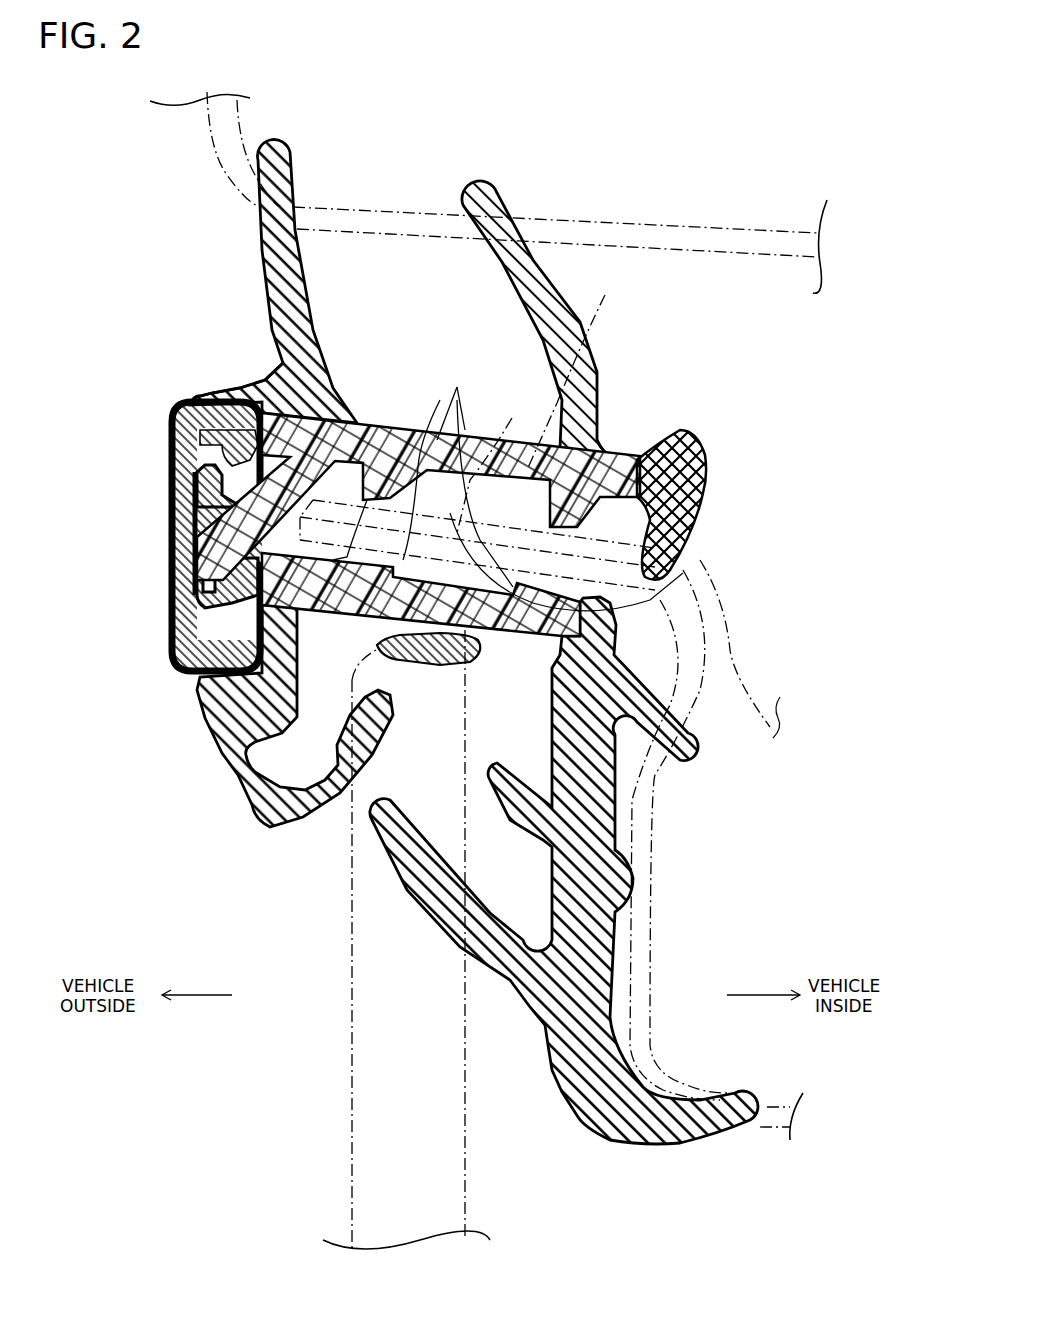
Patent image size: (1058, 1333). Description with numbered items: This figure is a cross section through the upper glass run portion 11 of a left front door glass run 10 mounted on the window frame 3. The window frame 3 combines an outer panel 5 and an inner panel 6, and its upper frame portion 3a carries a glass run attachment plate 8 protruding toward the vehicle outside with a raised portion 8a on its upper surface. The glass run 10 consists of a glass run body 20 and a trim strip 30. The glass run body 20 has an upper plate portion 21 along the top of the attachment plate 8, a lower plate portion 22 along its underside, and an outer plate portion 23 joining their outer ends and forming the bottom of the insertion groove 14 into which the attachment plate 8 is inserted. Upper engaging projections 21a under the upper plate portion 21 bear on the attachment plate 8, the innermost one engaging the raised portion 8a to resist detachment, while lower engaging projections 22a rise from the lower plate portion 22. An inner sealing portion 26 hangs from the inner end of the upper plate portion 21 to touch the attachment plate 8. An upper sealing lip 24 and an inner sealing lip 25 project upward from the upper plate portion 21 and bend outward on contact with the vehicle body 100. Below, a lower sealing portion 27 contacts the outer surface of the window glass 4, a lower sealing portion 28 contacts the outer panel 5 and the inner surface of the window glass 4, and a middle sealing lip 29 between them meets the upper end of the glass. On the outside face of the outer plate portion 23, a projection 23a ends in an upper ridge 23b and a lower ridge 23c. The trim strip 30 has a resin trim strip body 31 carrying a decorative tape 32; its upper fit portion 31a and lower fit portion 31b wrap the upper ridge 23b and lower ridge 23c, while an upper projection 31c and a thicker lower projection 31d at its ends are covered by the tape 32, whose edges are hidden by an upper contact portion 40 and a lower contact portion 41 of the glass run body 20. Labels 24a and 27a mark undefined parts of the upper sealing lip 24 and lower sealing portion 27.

The vehicle body 100 is at (197, 157).
The upper sealing lip 24 is at (263, 240).
The outer lip base 24a is at (310, 383).
The upper contact portion 40 is at (240, 373).
The upper glass run portion 11 is at (260, 360).
The upper projection 31c is at (293, 403).
The upper plate portion 21 is at (410, 423).
The upper engaging projections 21a is at (352, 458).
The lower engaging projections 22a is at (423, 470).
The glass run attachment plate 8 is at (491, 462).
The raised portion 8a is at (577, 365).
The inner sealing lip 25 is at (593, 410).
The left front door glass run 10 is at (633, 433).
The outer plate portion 23 is at (163, 517).
The upper fit portion 31a is at (165, 425).
The upper ridge 23b is at (170, 463).
The projection 23a is at (167, 487).
The decorative tape 32 is at (163, 530).
The trim strip 30 is at (189, 468).
The trim strip body 31 is at (163, 567).
The lower ridge 23c is at (167, 587).
The lower fit portion 31b is at (167, 627).
The lower projection 31d is at (170, 657).
The lower contact portion 41 is at (187, 680).
The glass run body 20 is at (417, 642).
The lower sealing portion 27 is at (193, 767).
The hook stem 27a is at (310, 605).
The middle sealing lip 29 is at (437, 665).
The lower plate portion 22 is at (543, 630).
The inner sealing portion 26 is at (707, 490).
The insertion groove 14 is at (620, 610).
The window frame 3 is at (736, 850).
The inner panel 6 is at (730, 647).
The upper frame portion 3a is at (849, 713).
The outer panel 5 is at (653, 813).
The lower sealing portion 28 is at (611, 970).
The window glass 4 is at (350, 1118).